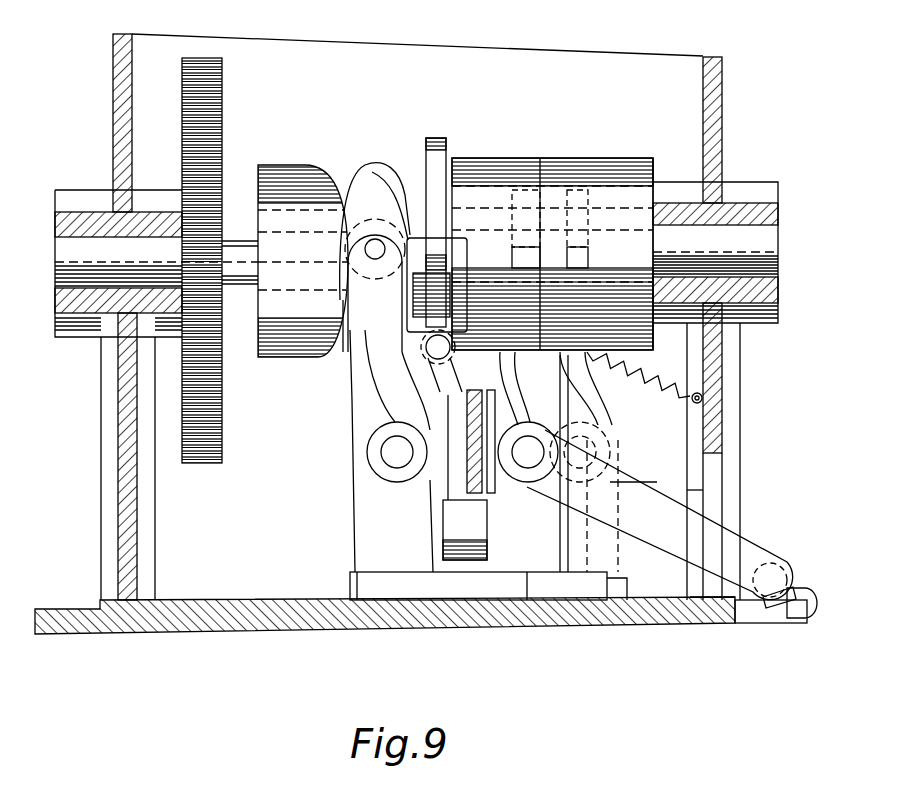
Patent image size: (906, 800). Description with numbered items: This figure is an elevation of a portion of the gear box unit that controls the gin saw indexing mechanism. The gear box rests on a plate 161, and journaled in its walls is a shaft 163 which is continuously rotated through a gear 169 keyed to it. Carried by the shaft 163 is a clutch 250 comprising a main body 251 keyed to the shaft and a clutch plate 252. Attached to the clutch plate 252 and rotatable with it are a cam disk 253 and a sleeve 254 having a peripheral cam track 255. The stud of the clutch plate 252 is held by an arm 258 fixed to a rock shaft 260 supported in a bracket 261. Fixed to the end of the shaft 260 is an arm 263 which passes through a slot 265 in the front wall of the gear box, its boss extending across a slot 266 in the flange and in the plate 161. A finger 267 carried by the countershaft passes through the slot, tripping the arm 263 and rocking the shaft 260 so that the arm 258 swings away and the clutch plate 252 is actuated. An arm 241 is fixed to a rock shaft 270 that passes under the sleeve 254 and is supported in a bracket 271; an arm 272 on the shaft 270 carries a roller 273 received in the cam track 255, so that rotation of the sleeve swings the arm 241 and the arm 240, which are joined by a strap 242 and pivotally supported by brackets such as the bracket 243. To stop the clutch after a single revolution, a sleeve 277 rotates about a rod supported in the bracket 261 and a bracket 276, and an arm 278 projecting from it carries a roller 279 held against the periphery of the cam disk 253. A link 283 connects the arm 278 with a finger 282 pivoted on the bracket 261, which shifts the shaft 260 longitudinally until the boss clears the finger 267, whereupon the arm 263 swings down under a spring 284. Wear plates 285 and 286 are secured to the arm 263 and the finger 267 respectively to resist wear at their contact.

The plate 161 is at (300, 624).
The shaft 163 is at (416, 284).
The gear 169 is at (222, 452).
The arm 240 is at (600, 408).
The arm 241 is at (408, 376).
The strap 242 is at (457, 410).
The bracket 243 is at (657, 482).
The clutch 250 is at (549, 155).
The main body 251 is at (620, 153).
The clutch plate 252 is at (473, 158).
The cam disk 253 is at (434, 138).
The sleeve 254 is at (272, 173).
The cam track 255 is at (350, 185).
The arm 258 is at (600, 390).
The rock shaft 260 is at (528, 470).
The bracket 261 is at (567, 557).
The arm 263 is at (748, 552).
The slot 265 is at (715, 490).
The slot 266 is at (760, 620).
The finger 267 is at (812, 618).
The rock shaft 270 is at (390, 452).
The bracket 271 is at (375, 518).
The arm 272 is at (426, 362).
The roller 273 is at (348, 252).
The bracket 276 is at (448, 525).
The sleeve 277 is at (477, 543).
The arm 278 is at (405, 428).
The roller 279 is at (410, 230).
The finger 282 is at (483, 455).
The link 283 is at (493, 447).
The spring 284 is at (660, 373).
The wear plate 285 is at (710, 626).
The wear plate 286 is at (786, 606).